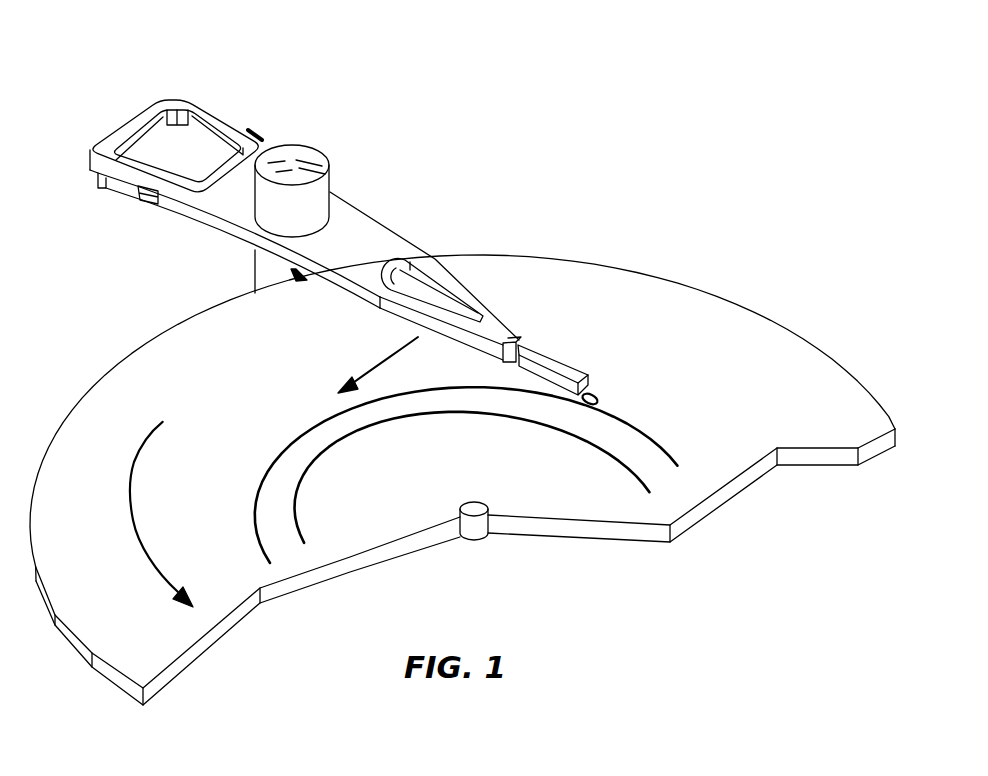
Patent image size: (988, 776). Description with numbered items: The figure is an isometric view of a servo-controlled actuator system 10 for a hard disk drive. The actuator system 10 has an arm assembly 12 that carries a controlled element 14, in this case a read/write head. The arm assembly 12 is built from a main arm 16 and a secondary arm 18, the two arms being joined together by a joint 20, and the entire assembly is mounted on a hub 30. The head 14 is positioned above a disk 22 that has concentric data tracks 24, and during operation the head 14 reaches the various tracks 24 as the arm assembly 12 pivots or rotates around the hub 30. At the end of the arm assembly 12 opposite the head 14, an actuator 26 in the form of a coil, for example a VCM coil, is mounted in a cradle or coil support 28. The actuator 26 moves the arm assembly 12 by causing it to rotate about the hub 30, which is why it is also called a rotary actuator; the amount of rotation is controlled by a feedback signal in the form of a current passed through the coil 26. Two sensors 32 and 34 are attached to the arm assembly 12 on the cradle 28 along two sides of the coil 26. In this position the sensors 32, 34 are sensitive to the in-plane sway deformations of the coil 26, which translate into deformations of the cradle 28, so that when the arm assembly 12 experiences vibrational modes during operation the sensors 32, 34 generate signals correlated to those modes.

The servo-controlled actuator system 10 is at (462, 131).
The arm assembly 12 is at (136, 296).
The controlled element 14 is at (597, 398).
The main arm 16 is at (377, 232).
The secondary arm 18 is at (567, 370).
The joint 20 is at (520, 340).
The disk 22 is at (743, 323).
The data tracks 24 is at (270, 467).
The actuator 26 is at (137, 117).
The coil support 28 is at (222, 108).
The hub 30 is at (317, 148).
The sensor 32 is at (143, 207).
The sensor 34 is at (262, 137).